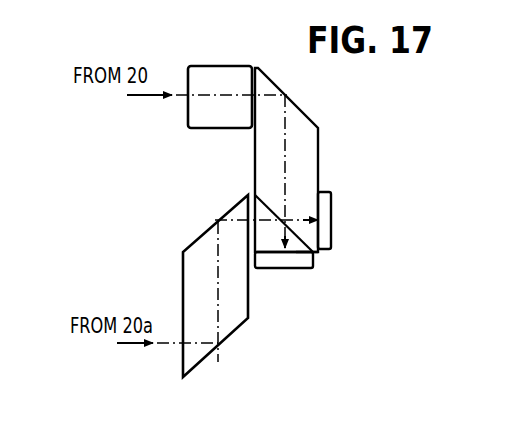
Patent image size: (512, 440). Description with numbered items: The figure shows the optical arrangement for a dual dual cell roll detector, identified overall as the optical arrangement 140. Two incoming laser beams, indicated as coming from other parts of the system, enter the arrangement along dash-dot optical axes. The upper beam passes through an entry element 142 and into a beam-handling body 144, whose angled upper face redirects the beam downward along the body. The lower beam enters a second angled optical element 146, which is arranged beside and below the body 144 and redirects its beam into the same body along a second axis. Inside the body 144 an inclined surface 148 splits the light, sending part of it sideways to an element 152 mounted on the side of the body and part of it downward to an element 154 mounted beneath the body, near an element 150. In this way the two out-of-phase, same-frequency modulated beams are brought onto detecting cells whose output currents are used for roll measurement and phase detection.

The optical assembly 140 is at (217, 180).
The lens 142 is at (218, 72).
The beam splitter prism 144 is at (316, 138).
The prism 146 is at (240, 316).
The reflective surface 148 is at (312, 243).
The detector 150 is at (303, 265).
The detector 152 is at (325, 212).
The detector 154 is at (275, 265).